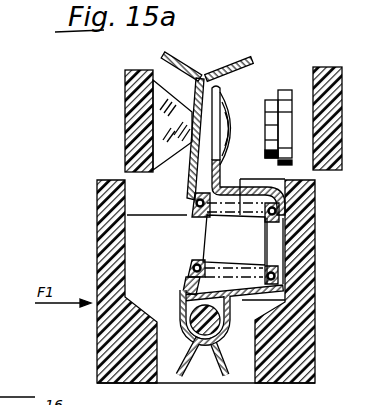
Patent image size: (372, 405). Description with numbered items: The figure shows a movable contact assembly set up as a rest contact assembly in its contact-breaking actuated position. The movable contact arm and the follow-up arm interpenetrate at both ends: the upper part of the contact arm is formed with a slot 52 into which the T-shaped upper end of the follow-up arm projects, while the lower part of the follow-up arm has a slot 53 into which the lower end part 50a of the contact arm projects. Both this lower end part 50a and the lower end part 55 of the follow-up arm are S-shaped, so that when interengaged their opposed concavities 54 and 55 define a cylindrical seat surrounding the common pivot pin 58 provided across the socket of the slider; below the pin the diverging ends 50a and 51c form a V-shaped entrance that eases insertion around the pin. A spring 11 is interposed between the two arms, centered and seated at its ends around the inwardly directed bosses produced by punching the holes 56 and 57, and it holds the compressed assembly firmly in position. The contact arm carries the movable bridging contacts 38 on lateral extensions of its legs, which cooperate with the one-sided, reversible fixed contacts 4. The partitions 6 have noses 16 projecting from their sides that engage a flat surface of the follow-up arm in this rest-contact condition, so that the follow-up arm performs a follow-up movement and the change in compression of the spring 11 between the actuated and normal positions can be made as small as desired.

The fixed contacts 4 is at (263, 100).
The partitions 6 is at (134, 112).
The noses 16 is at (167, 129).
The slot 52 is at (198, 66).
The movable bridging contacts 38 is at (236, 110).
The hole 56 is at (273, 242).
The spring 11 is at (192, 193).
The hole 57 is at (195, 232).
The slot 53 is at (283, 301).
The lower end part of follow-up arm 55 is at (232, 336).
The pivot pin 58 is at (184, 313).
The concavity 54 is at (183, 333).
The diverging end of follow-up arm 51c is at (222, 357).
The lower end part of contact arm 50a is at (176, 351).